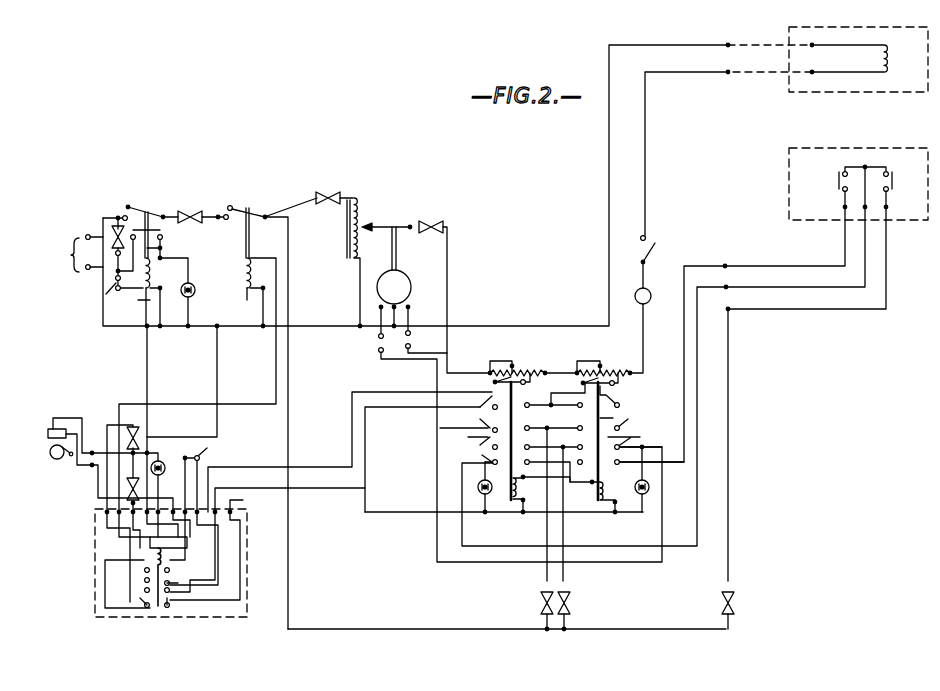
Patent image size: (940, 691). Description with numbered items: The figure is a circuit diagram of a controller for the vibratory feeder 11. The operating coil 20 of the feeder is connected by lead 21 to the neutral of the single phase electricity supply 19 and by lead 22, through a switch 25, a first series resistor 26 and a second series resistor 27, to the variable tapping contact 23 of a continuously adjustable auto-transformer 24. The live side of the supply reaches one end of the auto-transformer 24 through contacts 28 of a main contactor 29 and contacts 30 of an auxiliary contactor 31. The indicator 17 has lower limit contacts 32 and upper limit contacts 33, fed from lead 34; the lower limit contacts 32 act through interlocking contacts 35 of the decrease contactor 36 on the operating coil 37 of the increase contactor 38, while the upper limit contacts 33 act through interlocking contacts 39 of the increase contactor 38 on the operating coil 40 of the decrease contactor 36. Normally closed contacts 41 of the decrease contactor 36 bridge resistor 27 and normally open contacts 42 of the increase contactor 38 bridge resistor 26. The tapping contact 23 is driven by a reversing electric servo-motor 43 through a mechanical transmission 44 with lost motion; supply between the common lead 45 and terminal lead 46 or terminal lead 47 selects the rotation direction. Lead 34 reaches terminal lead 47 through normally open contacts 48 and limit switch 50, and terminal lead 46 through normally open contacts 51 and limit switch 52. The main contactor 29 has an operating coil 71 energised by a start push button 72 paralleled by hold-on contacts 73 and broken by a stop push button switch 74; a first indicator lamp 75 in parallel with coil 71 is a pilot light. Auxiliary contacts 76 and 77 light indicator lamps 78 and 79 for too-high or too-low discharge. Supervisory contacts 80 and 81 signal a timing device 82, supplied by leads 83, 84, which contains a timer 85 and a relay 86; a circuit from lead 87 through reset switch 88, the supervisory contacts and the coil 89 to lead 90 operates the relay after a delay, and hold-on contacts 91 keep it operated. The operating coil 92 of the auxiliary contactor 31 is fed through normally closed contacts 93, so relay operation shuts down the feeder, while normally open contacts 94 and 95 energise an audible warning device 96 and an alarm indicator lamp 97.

The vibratory feeder 11 is at (897, 93).
The indicator 17 is at (886, 221).
The single phase electricity supply 19 is at (67, 255).
The operating coil 20 is at (888, 62).
The lead 21 is at (609, 180).
The lead 22 is at (645, 172).
The variable tapping contact 23 is at (368, 224).
The continuously adjustable auto-transformer 24 is at (352, 255).
The switch 25 is at (649, 249).
The first series resistor 26 is at (598, 367).
The second series resistor 27 is at (516, 367).
The contacts 28 is at (151, 212).
The main contactor 29 is at (159, 283).
The contacts 30 is at (240, 212).
The auxiliary contactor 31 is at (256, 276).
The lower limit contacts 32 is at (892, 181).
The upper limit contacts 33 is at (839, 181).
The lead 34 is at (370, 629).
The normally closed interlocking contacts 35 is at (488, 459).
The decrease contactor 36 is at (525, 497).
The operating coil 37 is at (599, 505).
The increase contactor 38 is at (584, 500).
The normally closed interlocking contacts 39 is at (601, 465).
The operating coil 40 is at (511, 505).
The normally closed contacts 41 is at (493, 382).
The normally open contacts 42 is at (620, 408).
The reversing electric servo-motor 43 is at (387, 295).
The mechanical transmission 44 is at (398, 258).
The common lead 45 is at (401, 311).
The terminal lead 46 is at (378, 312).
The terminal lead 47 is at (412, 313).
The normally open contacts 48 is at (473, 457).
The limit switch 50 is at (412, 349).
The normally open contacts 51 is at (622, 428).
The limit switch 52 is at (377, 350).
The operating coil 71 is at (138, 303).
The start push button 72 is at (108, 292).
The hold-on contacts 73 is at (154, 231).
The stop push button switch 74 is at (112, 257).
The first indicator lamp 75 is at (189, 282).
The auxiliary contacts 76 is at (525, 438).
The auxiliary contacts 77 is at (630, 440).
The indicator lamp 78 is at (478, 487).
The indicator lamp 79 is at (649, 488).
The supervisory contacts 80 is at (480, 410).
The supervisory contacts 81 is at (579, 396).
The timing device 82 is at (247, 588).
The lead 83 is at (147, 357).
The lead 84 is at (217, 357).
The timer 85 is at (144, 548).
The relay 86 is at (175, 564).
The lead 87 is at (190, 536).
The reset switch 88 is at (200, 450).
The coil 89 is at (144, 570).
The lead 90 is at (187, 545).
The hold-on contacts 91 is at (144, 580).
The operating coil 92 is at (249, 290).
The normally closed contacts 93 is at (172, 603).
The normally open contacts 94 is at (144, 590).
The normally open contacts 95 is at (144, 605).
The audible warning device 96 is at (55, 459).
The alarm indicator lamp 97 is at (164, 480).